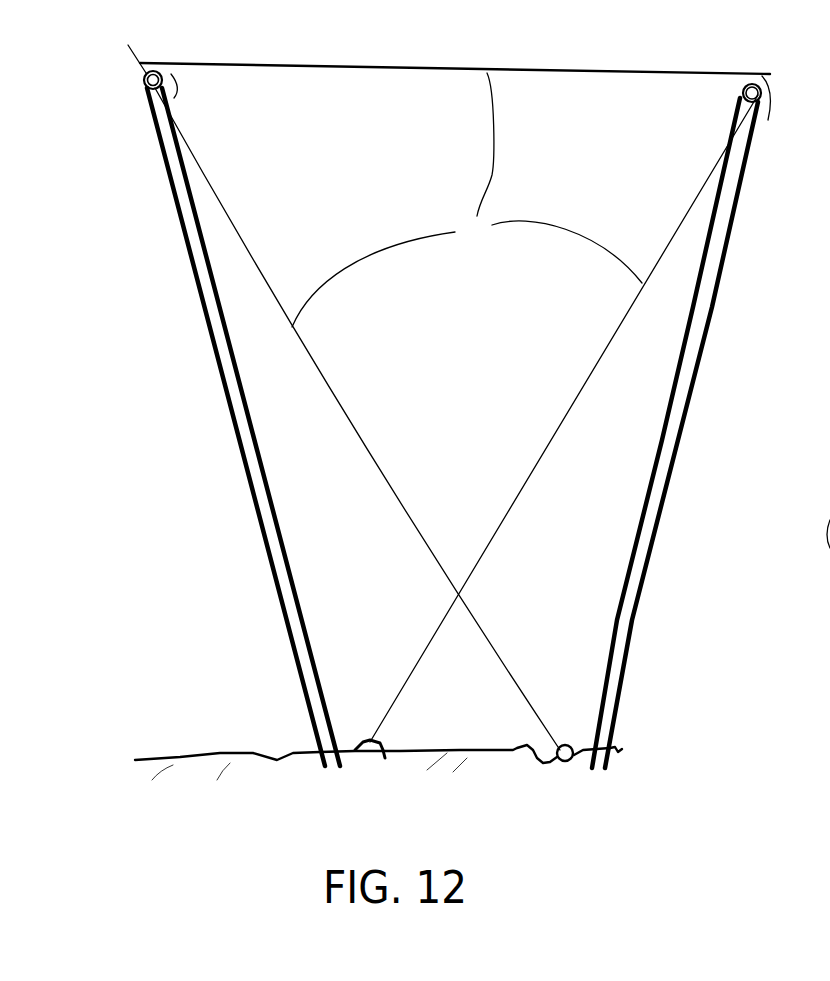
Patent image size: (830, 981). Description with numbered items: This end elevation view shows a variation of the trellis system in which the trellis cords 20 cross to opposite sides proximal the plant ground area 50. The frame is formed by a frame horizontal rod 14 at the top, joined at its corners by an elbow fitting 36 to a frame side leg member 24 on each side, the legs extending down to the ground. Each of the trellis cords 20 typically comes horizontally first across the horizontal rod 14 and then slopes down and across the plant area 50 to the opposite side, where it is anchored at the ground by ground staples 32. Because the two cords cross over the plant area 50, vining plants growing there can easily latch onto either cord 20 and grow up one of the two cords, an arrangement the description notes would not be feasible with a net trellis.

The frame horizontal rod 14 is at (172, 92).
The elbow fitting 36 is at (740, 82).
The trellis cords 20 is at (467, 200).
The frame side leg member 24 is at (670, 487).
The ground staples 32 is at (520, 752).
The plant ground area 50 is at (278, 760).